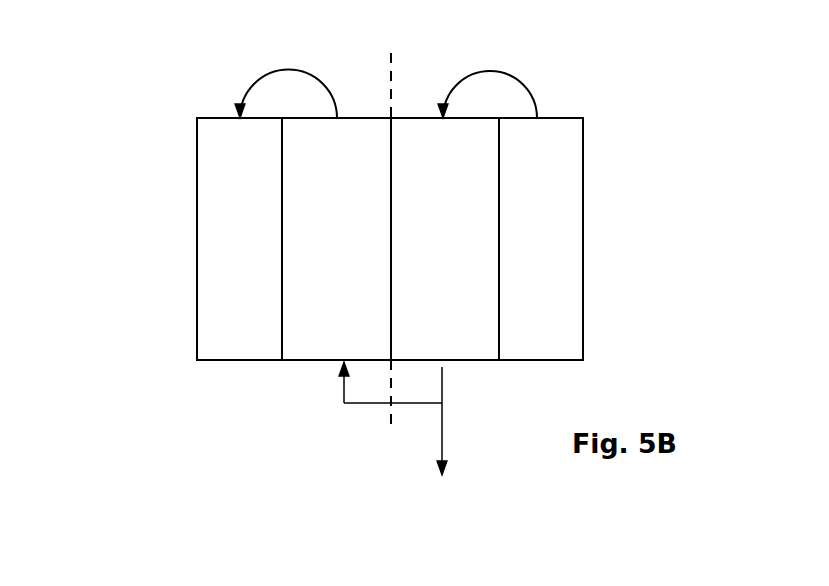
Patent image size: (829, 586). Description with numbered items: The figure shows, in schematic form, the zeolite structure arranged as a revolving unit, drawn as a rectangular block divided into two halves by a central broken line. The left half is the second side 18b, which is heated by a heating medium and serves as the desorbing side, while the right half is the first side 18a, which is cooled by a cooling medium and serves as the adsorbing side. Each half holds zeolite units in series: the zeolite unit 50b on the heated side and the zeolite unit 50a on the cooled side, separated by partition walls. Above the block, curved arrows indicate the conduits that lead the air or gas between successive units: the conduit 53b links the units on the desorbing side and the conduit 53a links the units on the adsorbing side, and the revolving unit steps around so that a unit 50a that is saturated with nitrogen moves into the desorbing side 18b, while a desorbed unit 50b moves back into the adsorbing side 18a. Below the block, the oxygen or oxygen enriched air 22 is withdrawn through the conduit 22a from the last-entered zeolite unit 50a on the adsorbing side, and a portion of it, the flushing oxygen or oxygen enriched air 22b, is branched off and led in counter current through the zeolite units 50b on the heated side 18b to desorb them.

The second side 18b is at (225, 239).
The zeolite unit 50b is at (220, 257).
The first side 18a is at (562, 239).
The zeolite unit 50a is at (569, 236).
The conduit 53b is at (312, 74).
The conduit 53a is at (525, 77).
The conduit 22a is at (442, 383).
The oxygen or oxygen enriched air 22 is at (442, 437).
The flushing oxygen or oxygen enriched air 22b is at (388, 405).